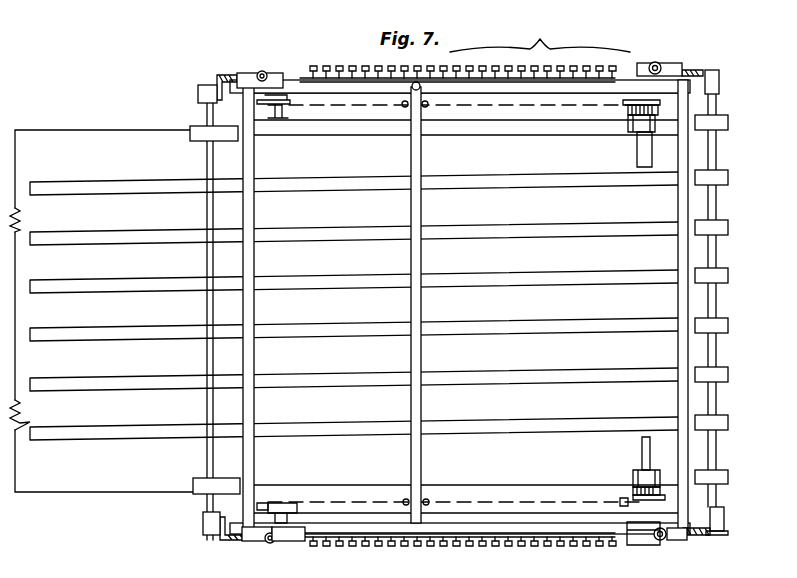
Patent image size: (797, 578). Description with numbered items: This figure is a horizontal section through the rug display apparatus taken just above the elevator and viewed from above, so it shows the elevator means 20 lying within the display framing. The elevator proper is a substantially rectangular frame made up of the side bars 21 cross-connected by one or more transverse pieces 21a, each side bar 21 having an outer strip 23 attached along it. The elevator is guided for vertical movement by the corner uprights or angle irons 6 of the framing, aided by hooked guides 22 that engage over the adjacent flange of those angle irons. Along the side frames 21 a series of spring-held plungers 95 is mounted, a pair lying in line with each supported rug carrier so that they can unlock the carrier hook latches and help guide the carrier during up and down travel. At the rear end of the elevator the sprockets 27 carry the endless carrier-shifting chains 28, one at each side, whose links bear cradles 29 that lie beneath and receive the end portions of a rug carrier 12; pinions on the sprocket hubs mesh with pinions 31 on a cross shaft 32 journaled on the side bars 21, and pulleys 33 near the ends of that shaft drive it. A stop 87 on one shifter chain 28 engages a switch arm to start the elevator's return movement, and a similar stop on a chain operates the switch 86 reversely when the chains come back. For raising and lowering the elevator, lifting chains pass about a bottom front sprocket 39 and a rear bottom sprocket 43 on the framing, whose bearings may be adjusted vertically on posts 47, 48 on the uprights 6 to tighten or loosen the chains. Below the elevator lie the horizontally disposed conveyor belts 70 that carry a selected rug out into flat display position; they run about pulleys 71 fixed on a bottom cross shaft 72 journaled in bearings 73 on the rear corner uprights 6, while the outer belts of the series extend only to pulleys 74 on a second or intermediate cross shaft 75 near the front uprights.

The corner uprights 6 is at (228, 72).
The carrier 12 is at (416, 254).
The elevator means 20 is at (540, 33).
The side bars 21 is at (515, 96).
The transverse pieces 21a is at (250, 308).
The hooked guides 22 is at (253, 73).
The outer strip 23 is at (343, 72).
The sprocket 27 is at (276, 111).
The carrier-shifting chains 28 is at (462, 108).
The cradles 29 is at (405, 104).
The pinions 31 is at (626, 108).
The cross shaft 32 is at (646, 168).
The pulleys 33 is at (634, 133).
The bottom front sprocket 39 is at (302, 542).
The rear bottom sprocket 43 is at (630, 540).
The post 47 is at (265, 71).
The post 48 is at (657, 62).
The conveyor belts 70 is at (88, 249).
The pulleys 71 is at (718, 117).
The bottom cross shaft 72 is at (713, 298).
The bearings 73 is at (720, 82).
The pulleys 74 is at (203, 140).
The intermediate cross shaft 75 is at (207, 258).
The switch 86 is at (262, 503).
The stop 87 is at (620, 502).
The plungers 95 is at (326, 66).